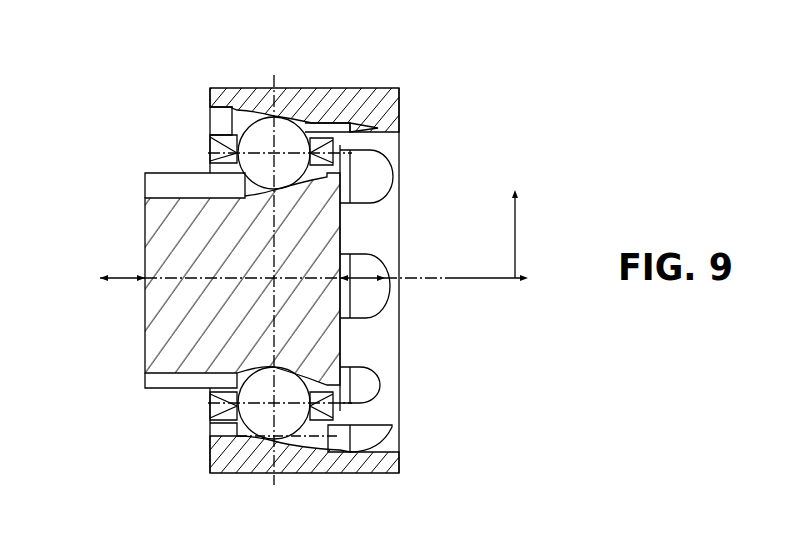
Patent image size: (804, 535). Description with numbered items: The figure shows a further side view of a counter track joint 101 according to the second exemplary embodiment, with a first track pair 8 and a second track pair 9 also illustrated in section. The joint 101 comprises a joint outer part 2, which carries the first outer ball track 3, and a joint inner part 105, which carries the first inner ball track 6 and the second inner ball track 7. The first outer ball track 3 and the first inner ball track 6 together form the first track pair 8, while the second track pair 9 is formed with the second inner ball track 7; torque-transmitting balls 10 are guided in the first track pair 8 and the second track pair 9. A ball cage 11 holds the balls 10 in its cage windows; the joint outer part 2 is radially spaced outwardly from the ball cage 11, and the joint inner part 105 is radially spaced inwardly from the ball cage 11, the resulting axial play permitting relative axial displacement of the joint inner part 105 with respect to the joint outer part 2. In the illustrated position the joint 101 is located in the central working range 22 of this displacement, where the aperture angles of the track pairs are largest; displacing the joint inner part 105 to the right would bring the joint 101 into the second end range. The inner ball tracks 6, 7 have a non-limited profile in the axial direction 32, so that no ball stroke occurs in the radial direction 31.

The joint outer part 2 is at (228, 453).
The first outer ball track 3 is at (226, 128).
The first inner ball track 6 is at (162, 198).
The second inner ball track 7 is at (173, 378).
The first track pair 8 is at (232, 118).
The second track pair 9 is at (358, 437).
The torque-transmitting ball 10 is at (284, 133).
The ball cage 11 is at (318, 147).
The central working range 22 is at (133, 278).
The radial direction 31 is at (518, 222).
The axial direction 32 is at (497, 278).
The joint 101 is at (408, 150).
The joint inner part 105 is at (188, 329).